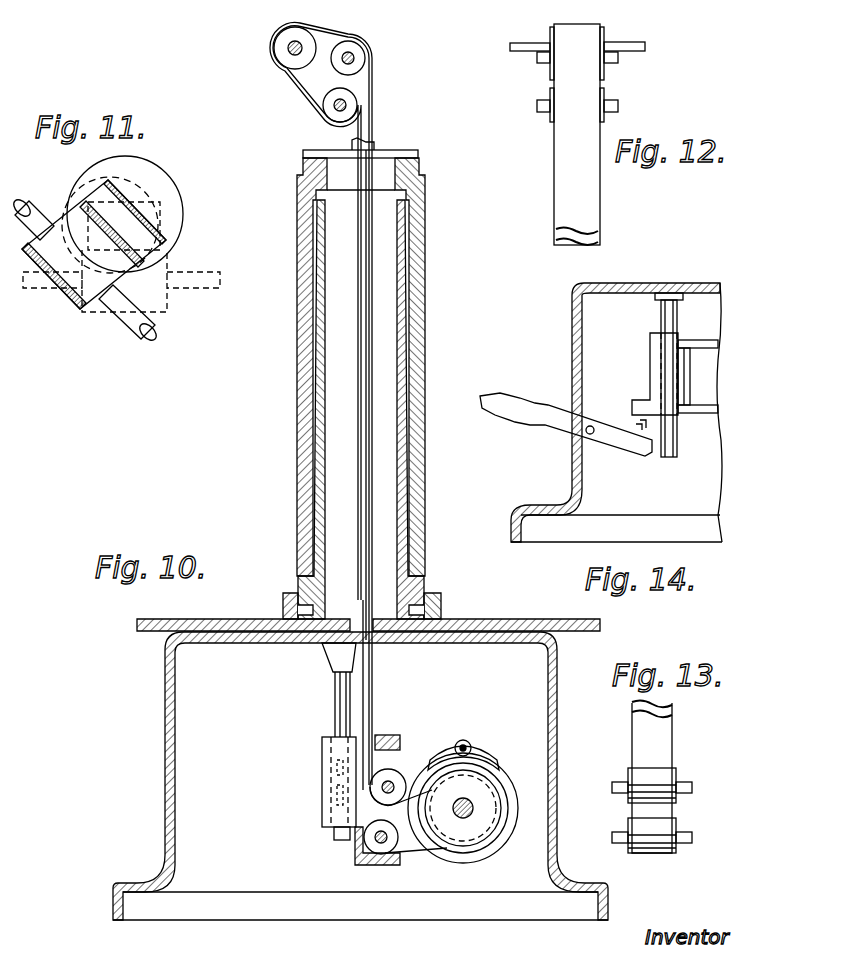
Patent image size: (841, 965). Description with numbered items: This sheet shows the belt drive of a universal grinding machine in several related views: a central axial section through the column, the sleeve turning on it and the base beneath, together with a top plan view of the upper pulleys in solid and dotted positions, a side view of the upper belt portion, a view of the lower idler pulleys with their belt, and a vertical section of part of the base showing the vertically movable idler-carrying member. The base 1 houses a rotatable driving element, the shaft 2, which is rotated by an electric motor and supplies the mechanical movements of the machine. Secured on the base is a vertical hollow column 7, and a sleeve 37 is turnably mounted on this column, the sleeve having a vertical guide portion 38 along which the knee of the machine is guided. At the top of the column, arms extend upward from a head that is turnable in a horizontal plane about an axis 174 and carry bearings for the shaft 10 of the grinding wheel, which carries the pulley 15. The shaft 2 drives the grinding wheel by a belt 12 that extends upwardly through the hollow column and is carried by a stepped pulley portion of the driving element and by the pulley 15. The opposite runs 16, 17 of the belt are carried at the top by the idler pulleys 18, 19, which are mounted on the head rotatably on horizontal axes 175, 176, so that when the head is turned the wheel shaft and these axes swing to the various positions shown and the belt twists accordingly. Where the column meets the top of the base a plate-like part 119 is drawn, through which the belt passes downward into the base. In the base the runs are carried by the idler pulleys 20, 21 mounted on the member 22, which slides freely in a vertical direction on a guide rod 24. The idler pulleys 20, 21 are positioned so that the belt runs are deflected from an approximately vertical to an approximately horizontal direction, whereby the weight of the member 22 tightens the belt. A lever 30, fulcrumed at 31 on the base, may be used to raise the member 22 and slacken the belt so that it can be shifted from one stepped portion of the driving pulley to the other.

In FIG. 10, the base 1 is at (468, 691).
In FIG. 14, the base 1 is at (582, 394).
In FIG. 10, the shaft 2 is at (462, 816).
In FIG. 10, the vertical hollow column 7 is at (318, 580).
In FIG. 10, the shaft 10 is at (292, 101).
In FIG. 11, the shaft 10 is at (189, 298).
In FIG. 12, the shaft 10 is at (512, 52).
In FIG. 10, the belt 12 is at (362, 418).
In FIG. 10, the pulley 15 is at (287, 56).
In FIG. 11, the pulley 15 is at (76, 306).
In FIG. 12, the pulley 15 is at (660, 18).
In FIG. 10, the run of the belt 16 is at (360, 345).
In FIG. 13, the run of the belt 16 is at (672, 704).
In FIG. 10, the run of the belt 17 is at (368, 366).
In FIG. 13, the run of the belt 17 is at (664, 760).
In FIG. 10, the idler pulley 18 is at (336, 117).
In FIG. 12, the idler pulley 18 is at (553, 120).
In FIG. 10, the idler pulley 19 is at (366, 66).
In FIG. 11, the idler pulley 19 is at (142, 217).
In FIG. 12, the idler pulley 19 is at (605, 70).
In FIG. 10, the idler pulley 20 is at (374, 862).
In FIG. 13, the idler pulley 20 is at (667, 832).
In FIG. 10, the idler pulley 21 is at (393, 778).
In FIG. 13, the idler pulley 21 is at (667, 782).
In FIG. 10, the member 22 is at (326, 800).
In FIG. 14, the member 22 is at (650, 386).
In FIG. 10, the guide rod 24 is at (338, 703).
In FIG. 14, the guide rod 24 is at (669, 458).
In FIG. 14, the lever 30 is at (545, 420).
In FIG. 14, the fulcrum 31 is at (593, 438).
In FIG. 10, the sleeve 37 is at (300, 392).
In FIG. 10, the vertical guide portion 38 is at (351, 367).
In FIG. 10, the top plate 119 is at (521, 620).
In FIG. 10, the axis 174 is at (372, 150).
In FIG. 10, the horizontal axis 175 is at (352, 58).
In FIG. 11, the horizontal axis 175 is at (150, 242).
In FIG. 12, the horizontal axis 175 is at (540, 60).
In FIG. 10, the horizontal axis 176 is at (334, 105).
In FIG. 12, the horizontal axis 176 is at (536, 106).